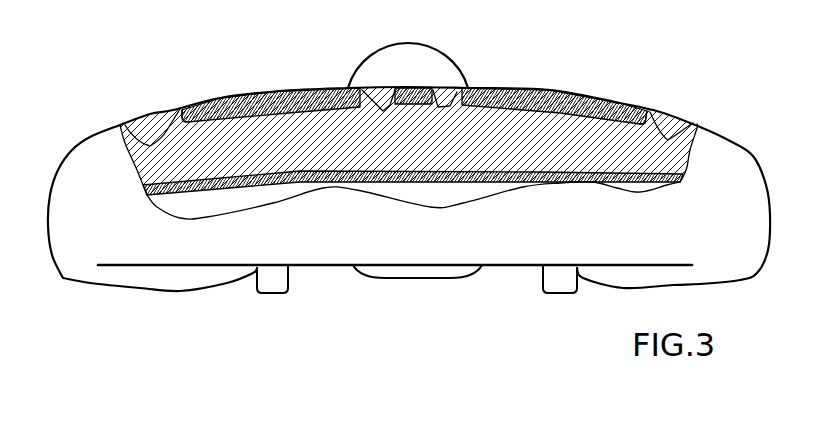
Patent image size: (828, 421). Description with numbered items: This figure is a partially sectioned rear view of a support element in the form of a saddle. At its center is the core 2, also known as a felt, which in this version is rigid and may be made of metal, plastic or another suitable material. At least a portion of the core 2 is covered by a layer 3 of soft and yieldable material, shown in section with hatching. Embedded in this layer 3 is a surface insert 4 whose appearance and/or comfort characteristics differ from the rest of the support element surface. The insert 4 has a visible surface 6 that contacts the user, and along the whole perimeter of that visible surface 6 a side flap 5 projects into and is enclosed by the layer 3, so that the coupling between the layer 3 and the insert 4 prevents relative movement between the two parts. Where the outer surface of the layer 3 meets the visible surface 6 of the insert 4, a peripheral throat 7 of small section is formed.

The core 2 is at (436, 174).
The layer of soft and yieldable material 3 is at (307, 143).
The surface insert 4 is at (273, 93).
The side flap 5 is at (131, 133).
The visible surface 6 is at (413, 67).
The peripheral throat 7 is at (174, 113).